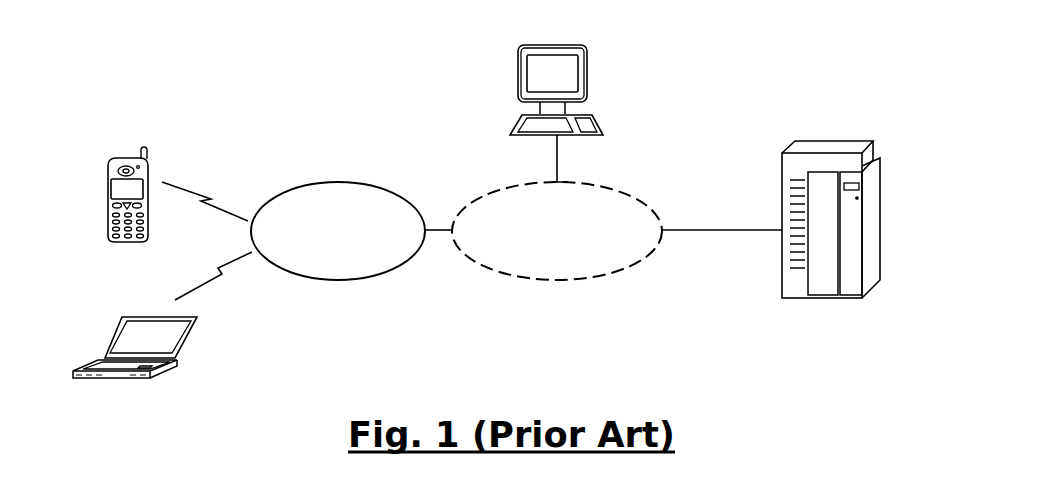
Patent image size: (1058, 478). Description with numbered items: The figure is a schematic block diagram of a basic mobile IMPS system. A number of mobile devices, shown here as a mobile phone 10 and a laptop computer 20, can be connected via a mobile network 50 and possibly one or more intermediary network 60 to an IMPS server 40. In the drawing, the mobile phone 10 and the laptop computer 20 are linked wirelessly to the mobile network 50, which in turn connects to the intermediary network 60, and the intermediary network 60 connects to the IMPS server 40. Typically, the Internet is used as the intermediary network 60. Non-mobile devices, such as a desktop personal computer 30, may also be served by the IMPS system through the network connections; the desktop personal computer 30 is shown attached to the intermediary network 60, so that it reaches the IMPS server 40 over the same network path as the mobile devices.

The mobile phone 10 is at (116, 187).
The laptop computer 20 is at (99, 361).
The desktop personal computer 30 is at (531, 72).
The IMPS server 40 is at (822, 148).
The mobile network 50 is at (340, 258).
The intermediary network 60 is at (600, 258).